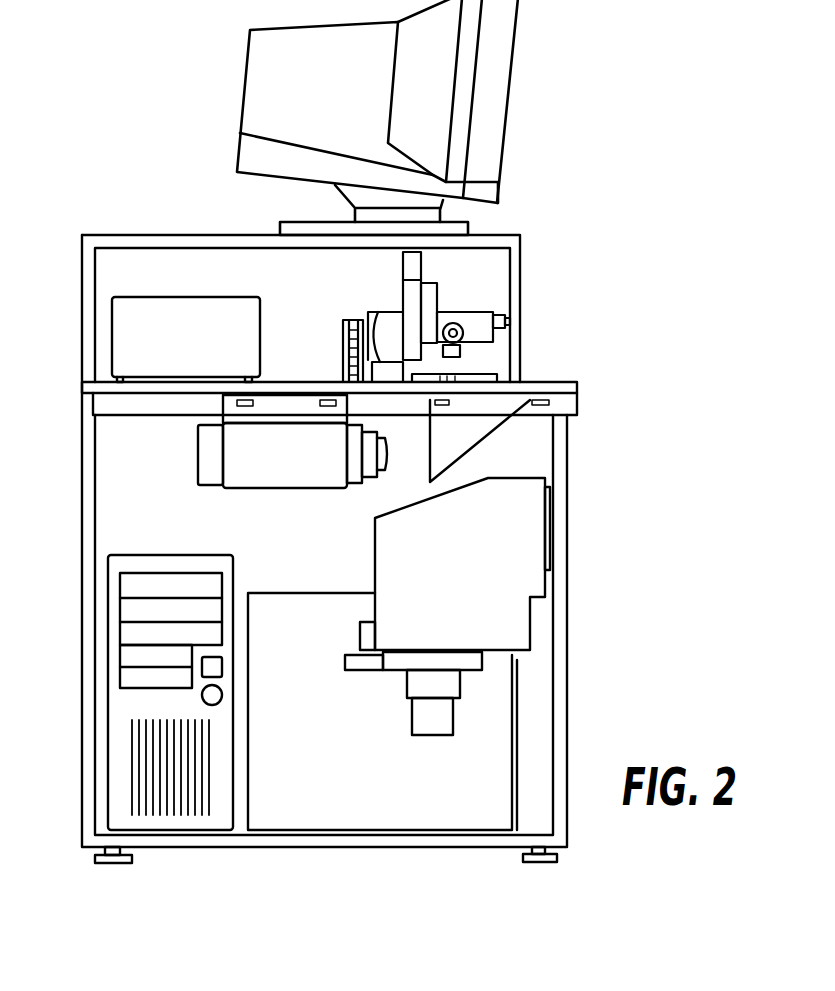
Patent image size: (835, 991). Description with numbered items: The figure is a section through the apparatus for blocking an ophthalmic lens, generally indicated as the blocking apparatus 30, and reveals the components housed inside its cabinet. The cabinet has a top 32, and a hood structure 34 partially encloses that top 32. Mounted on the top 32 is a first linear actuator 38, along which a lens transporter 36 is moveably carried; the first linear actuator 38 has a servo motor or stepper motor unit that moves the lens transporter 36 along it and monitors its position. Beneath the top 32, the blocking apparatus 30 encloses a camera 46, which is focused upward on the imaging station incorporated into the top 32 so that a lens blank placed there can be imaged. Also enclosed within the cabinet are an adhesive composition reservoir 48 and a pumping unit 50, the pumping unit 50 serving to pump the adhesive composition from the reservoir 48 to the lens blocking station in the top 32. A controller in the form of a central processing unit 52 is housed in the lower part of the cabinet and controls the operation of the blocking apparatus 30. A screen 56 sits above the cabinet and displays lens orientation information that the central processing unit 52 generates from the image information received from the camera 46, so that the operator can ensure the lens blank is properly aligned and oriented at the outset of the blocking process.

The blocking apparatus 30 is at (567, 458).
The top 32 is at (562, 381).
The hood structure 34 is at (521, 311).
The lens transporter 36 is at (432, 297).
The first linear actuator 38 is at (380, 312).
The camera 46 is at (265, 465).
The adhesive composition reservoir 48 is at (512, 618).
The pumping unit 50 is at (427, 658).
The central processing unit 52 is at (133, 707).
The screen 56 is at (510, 95).